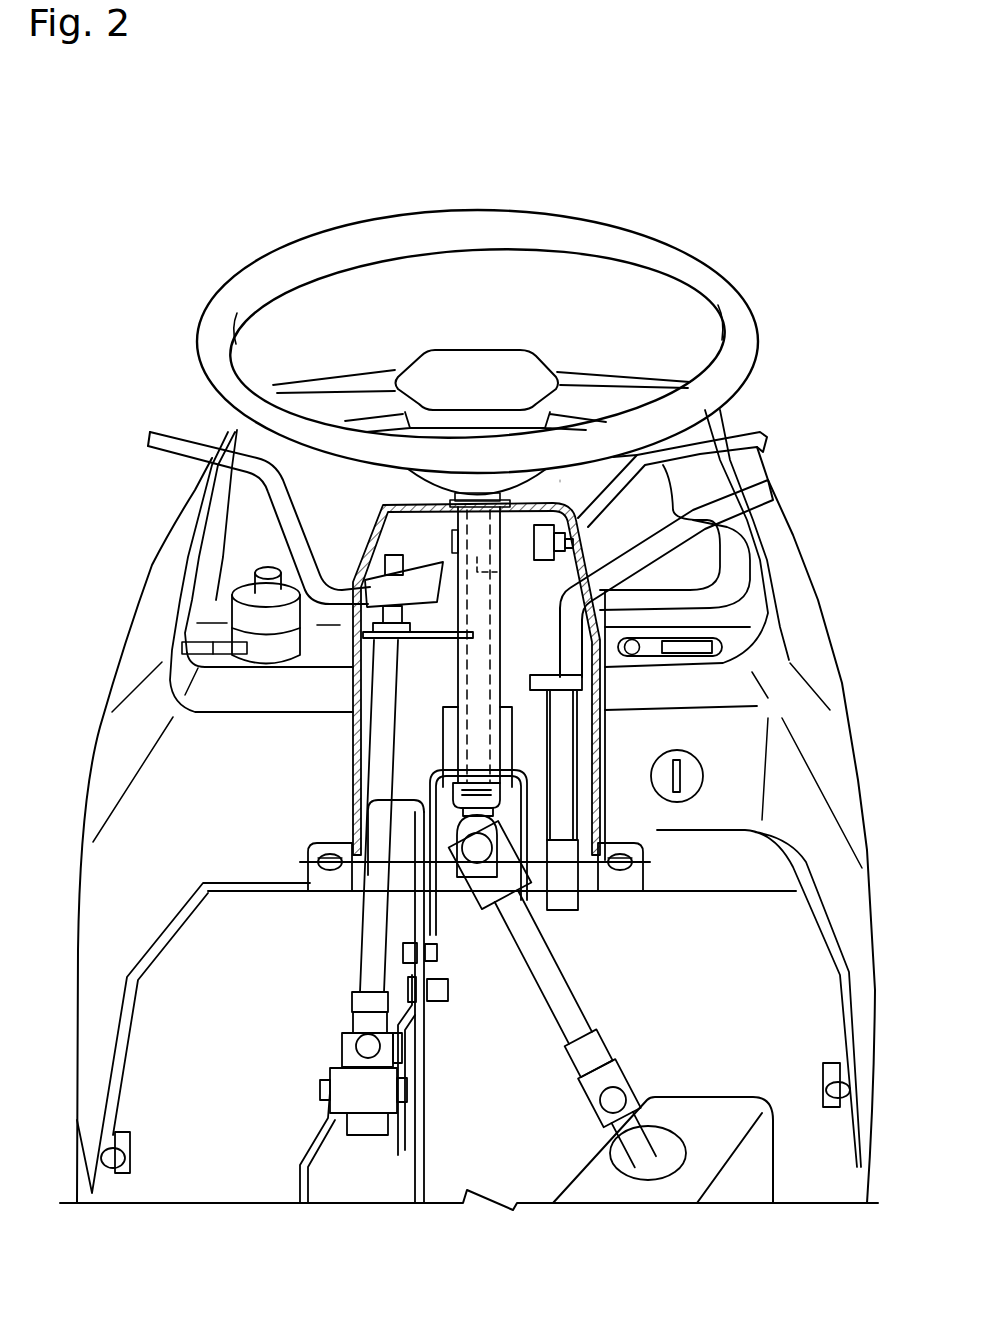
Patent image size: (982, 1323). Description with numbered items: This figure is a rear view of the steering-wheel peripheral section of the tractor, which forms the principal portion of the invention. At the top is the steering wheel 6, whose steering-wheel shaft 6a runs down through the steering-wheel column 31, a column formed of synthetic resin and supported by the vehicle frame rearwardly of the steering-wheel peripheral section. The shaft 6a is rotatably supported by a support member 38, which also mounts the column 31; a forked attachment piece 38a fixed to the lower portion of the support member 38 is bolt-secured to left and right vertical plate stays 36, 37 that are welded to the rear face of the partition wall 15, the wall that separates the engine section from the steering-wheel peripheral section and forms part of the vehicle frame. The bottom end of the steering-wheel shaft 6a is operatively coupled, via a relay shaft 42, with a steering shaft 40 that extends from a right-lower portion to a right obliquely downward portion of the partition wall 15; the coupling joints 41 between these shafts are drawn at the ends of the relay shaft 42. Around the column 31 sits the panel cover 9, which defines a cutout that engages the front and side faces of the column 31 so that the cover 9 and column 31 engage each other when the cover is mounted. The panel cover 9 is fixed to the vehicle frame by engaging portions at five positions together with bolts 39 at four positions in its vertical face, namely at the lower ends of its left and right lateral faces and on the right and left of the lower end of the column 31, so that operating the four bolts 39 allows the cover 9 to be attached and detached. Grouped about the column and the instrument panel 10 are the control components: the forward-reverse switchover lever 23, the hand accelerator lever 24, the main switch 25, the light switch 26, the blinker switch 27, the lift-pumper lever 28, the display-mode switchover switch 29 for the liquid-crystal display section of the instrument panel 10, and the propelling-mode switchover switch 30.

The steering wheel 6 is at (588, 228).
The steering-wheel shaft 6a is at (490, 662).
The panel cover 9 is at (827, 668).
The instrument panel 10 is at (312, 513).
The partition wall 15 is at (760, 1138).
The forward-reverse switchover lever 23 is at (164, 430).
The hand accelerator lever 24 is at (702, 518).
The main switch 25 is at (700, 779).
The light switch 26 is at (255, 580).
The blinker switch 27 is at (186, 645).
The lift-pumper lever 28 is at (760, 430).
The display-mode switchover switch 29 is at (630, 656).
The propelling-mode switchover switch 30 is at (716, 650).
The steering-wheel column 31 is at (353, 753).
The vertical plate stay 36 is at (427, 1049).
The vertical plate stay 37 is at (575, 890).
The support member 38 is at (451, 691).
The forked attachment piece 38a is at (352, 792).
The bolts 39 is at (330, 877).
The steering shaft 40 is at (682, 1140).
The universal joint 41 is at (472, 884).
The relay shaft 42 is at (570, 1002).